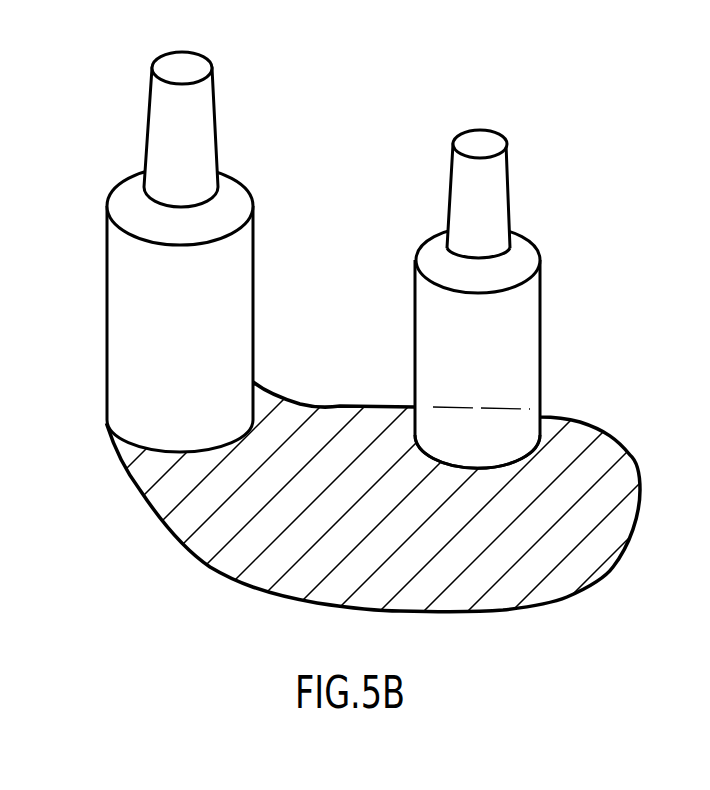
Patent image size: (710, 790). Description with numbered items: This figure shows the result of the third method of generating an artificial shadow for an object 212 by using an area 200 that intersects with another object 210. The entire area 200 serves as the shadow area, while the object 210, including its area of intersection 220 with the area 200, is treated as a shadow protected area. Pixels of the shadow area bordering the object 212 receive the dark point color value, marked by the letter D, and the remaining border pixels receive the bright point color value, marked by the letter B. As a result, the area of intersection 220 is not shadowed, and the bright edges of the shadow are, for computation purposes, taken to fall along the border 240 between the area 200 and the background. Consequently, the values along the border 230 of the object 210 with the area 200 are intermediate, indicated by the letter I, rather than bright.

The area 200 is at (397, 428).
The object 210 is at (498, 372).
The object 212 is at (193, 310).
The area of intersection 220 is at (482, 452).
The border 230 is at (498, 463).
The border 240 is at (457, 407).